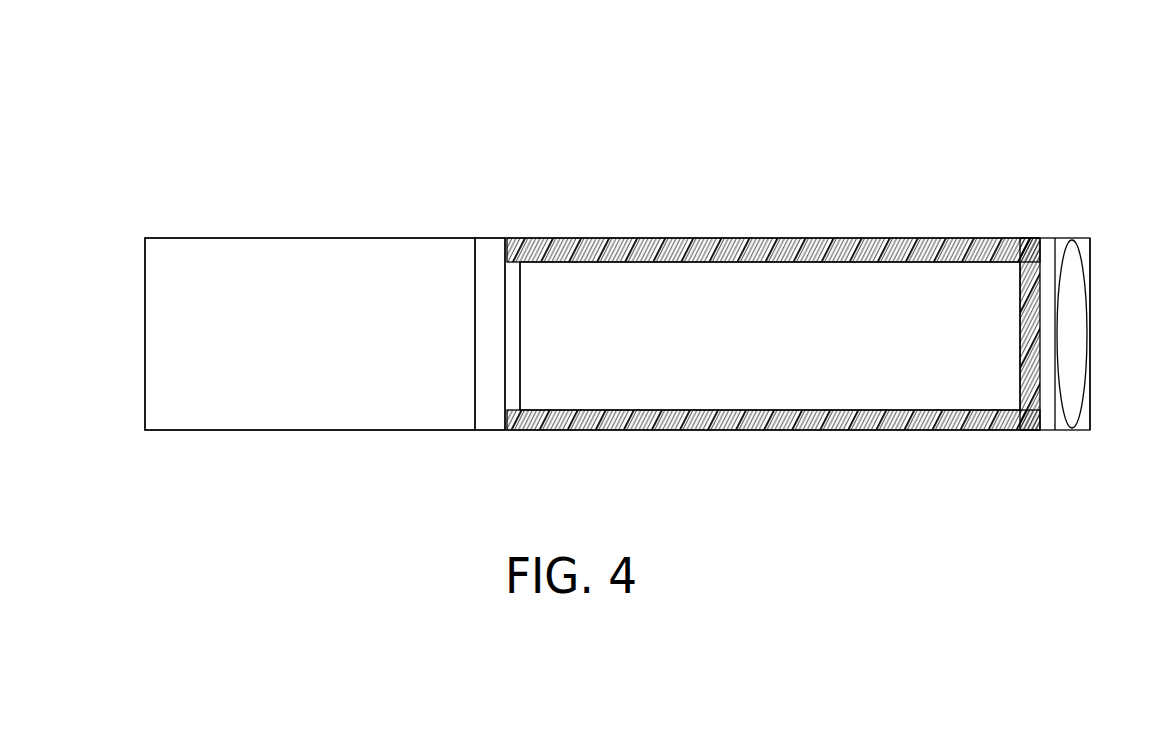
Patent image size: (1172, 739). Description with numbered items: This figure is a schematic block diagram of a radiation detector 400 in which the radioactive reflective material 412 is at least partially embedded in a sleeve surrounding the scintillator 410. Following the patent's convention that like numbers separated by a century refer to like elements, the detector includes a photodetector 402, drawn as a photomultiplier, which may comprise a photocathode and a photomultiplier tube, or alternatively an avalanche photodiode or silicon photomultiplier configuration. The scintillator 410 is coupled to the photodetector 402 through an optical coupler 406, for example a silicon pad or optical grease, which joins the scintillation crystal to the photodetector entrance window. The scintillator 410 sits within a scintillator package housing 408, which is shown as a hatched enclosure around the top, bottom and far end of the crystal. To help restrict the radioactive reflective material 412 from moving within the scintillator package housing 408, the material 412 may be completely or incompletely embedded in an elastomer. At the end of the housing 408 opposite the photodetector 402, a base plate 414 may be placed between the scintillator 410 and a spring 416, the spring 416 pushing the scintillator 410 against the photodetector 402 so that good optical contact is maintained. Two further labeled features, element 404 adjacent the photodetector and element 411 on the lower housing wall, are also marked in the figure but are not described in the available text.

The radiation detector 400 is at (617, 243).
The photodetector 402 is at (276, 313).
The optical window 404 is at (462, 349).
The optical coupler 406 is at (470, 311).
The scintillator package housing 408 is at (774, 329).
The scintillator 410 is at (770, 301).
The bottom housing wall 411 is at (773, 439).
The radioactive reflective material 412 is at (773, 227).
The base plate 414 is at (1002, 310).
The spring 416 is at (1042, 354).